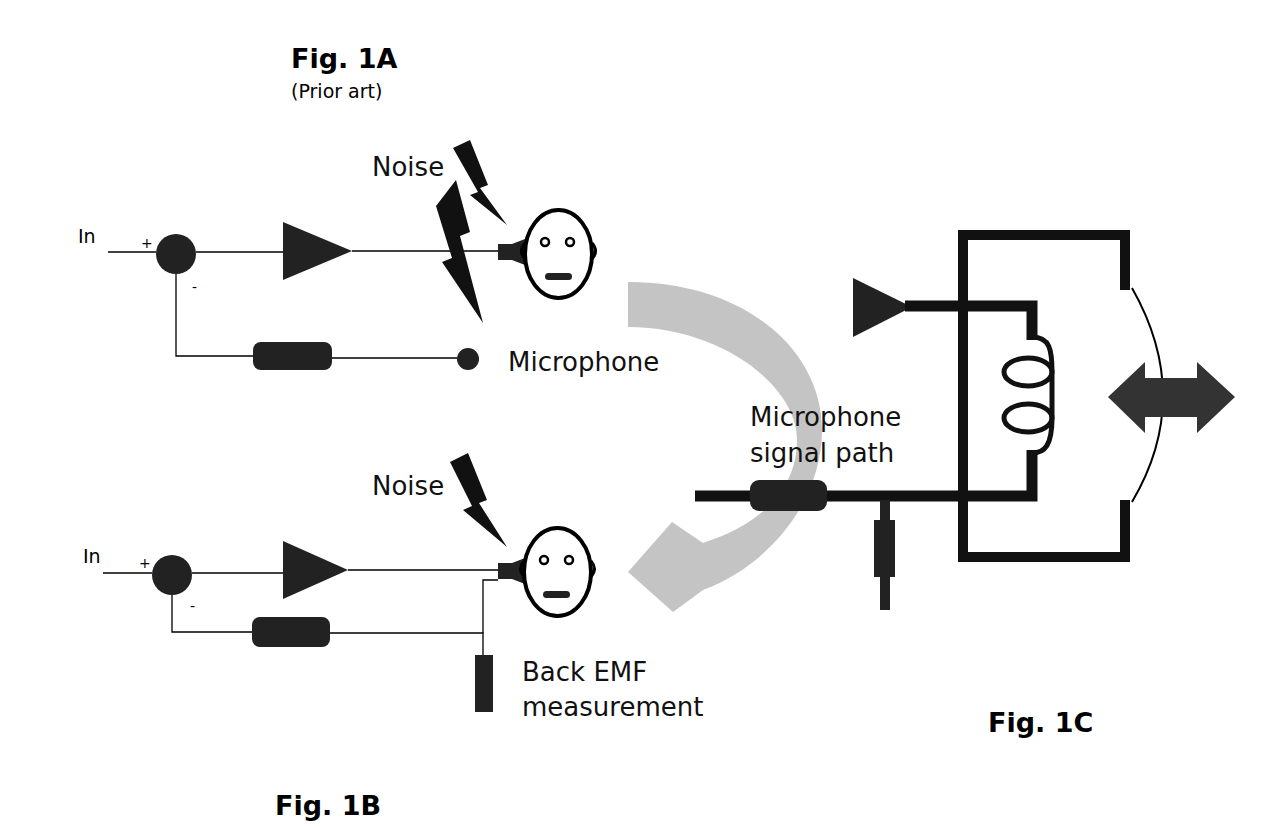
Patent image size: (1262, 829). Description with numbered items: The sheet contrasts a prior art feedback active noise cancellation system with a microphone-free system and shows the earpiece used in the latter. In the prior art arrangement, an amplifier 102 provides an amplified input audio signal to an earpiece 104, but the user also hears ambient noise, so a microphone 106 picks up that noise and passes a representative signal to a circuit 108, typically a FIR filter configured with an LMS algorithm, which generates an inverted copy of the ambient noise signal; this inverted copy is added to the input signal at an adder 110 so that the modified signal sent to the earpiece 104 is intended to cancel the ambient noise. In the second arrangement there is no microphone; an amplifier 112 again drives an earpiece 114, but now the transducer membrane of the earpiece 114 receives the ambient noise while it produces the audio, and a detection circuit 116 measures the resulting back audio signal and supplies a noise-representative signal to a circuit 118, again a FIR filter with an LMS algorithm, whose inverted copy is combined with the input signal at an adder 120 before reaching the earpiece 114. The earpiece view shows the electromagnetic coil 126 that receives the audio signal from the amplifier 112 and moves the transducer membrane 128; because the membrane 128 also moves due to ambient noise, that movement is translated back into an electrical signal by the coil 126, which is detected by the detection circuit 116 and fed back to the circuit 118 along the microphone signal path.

In FIG. 1A, the amplifier 102 is at (320, 215).
In FIG. 1A, the earpiece 104 is at (517, 218).
In FIG. 1A, the microphone 106 is at (490, 381).
In FIG. 1A, the circuit 108 is at (338, 321).
In FIG. 1A, the adder 110 is at (176, 215).
In FIG. 1B, the amplifier 112 is at (300, 518).
In FIG. 1C, the amplifier 112 is at (858, 253).
In FIG. 1B, the earpiece 114 is at (512, 538).
In FIG. 1C, the earpiece 114 is at (1007, 584).
In FIG. 1B, the detection circuit 116 is at (454, 685).
In FIG. 1C, the detection circuit 116 is at (856, 573).
In FIG. 1B, the circuit 118 is at (277, 672).
In FIG. 1C, the circuit 118 is at (764, 532).
In FIG. 1B, the adder 120 is at (180, 535).
In FIG. 1C, the electromagnetic coil 126 is at (1048, 320).
In FIG. 1C, the transducer membrane 128 is at (1166, 507).